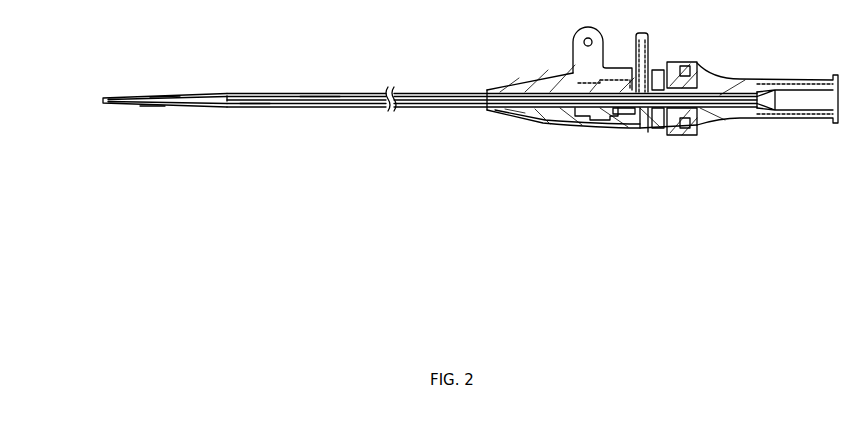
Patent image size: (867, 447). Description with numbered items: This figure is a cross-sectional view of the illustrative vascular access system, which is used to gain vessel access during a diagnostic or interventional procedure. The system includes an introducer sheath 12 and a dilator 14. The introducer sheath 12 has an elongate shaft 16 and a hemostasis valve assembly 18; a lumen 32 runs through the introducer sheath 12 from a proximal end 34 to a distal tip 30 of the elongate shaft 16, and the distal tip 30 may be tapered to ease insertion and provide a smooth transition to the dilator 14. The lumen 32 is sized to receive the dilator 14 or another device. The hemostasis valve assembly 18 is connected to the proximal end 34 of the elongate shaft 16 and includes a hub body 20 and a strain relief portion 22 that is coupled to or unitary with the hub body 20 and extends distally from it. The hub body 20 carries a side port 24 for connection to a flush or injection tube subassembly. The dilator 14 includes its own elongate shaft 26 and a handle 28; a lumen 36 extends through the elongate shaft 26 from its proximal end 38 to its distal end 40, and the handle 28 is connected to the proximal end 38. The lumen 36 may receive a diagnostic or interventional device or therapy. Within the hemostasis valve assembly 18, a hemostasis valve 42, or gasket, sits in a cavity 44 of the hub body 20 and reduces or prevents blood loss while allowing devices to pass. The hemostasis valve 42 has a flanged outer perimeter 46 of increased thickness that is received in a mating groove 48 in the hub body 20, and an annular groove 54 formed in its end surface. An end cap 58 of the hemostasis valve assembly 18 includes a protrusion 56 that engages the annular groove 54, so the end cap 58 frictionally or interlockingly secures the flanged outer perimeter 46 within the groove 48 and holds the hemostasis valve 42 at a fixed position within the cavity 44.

The introducer sheath 12 is at (252, 92).
The dilator 14 is at (152, 108).
The elongate shaft 16 is at (427, 93).
The hemostasis valve assembly 18 is at (535, 56).
The hub body 20 is at (654, 130).
The strain relief portion 22 is at (540, 120).
The side port 24 is at (632, 40).
The elongate shaft 26 is at (162, 90).
The handle 28 is at (739, 78).
The distal tip 30 is at (253, 109).
The lumen 32 is at (652, 84).
The proximal end 34 is at (604, 120).
The lumen 36 is at (317, 93).
The proximal end 38 is at (761, 105).
The distal end 40 is at (104, 96).
The hemostasis valve 42 is at (662, 125).
The cavity 44 is at (662, 81).
The flanged outer perimeter 46 is at (671, 64).
The groove 48 is at (673, 130).
The annular groove 54 is at (632, 114).
The protrusion 56 is at (694, 128).
The end cap 58 is at (691, 68).